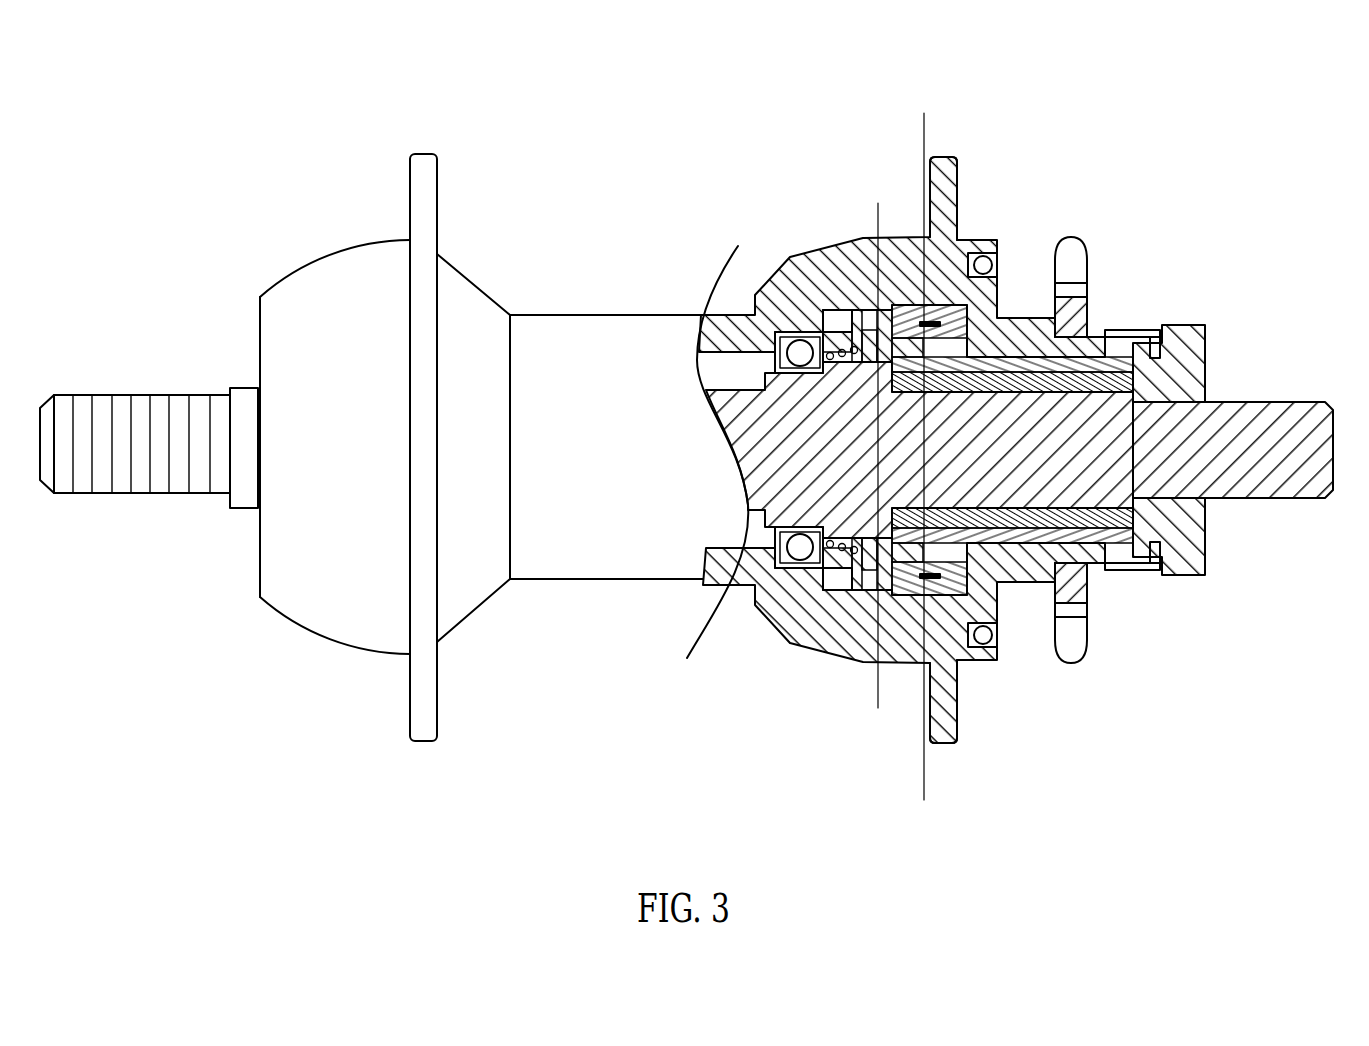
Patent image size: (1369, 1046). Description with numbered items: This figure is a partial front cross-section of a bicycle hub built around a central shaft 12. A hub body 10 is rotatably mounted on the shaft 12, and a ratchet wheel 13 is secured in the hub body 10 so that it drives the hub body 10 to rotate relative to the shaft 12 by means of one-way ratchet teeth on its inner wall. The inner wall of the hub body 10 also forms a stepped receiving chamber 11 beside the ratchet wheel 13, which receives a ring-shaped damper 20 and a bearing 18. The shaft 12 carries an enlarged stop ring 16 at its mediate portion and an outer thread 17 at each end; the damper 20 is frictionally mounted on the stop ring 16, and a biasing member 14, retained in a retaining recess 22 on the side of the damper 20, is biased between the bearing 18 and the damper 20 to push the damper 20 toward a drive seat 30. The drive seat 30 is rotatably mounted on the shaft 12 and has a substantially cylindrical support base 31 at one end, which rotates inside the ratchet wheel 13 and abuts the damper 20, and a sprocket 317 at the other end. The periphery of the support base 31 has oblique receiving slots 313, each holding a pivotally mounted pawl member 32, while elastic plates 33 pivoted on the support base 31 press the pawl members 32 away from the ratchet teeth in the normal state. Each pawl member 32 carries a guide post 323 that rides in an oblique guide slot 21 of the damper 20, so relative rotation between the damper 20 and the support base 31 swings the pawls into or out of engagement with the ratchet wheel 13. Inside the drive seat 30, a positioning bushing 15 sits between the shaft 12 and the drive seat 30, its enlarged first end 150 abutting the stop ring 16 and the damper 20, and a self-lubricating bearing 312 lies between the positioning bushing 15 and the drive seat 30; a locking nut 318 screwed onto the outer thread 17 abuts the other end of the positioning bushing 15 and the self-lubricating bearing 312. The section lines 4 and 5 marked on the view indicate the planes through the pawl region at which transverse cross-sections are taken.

The section line 4- 4 is at (921, 123).
The section line 5- 5 is at (875, 212).
The hub body 10 is at (368, 227).
The stepped receiving chamber 11 is at (702, 313).
The shaft 12 is at (1257, 477).
The ratchet wheel 13 is at (907, 237).
The biasing member 14 is at (757, 603).
The positioning bushing 15 is at (1132, 329).
The stop ring 16 is at (712, 410).
The outer thread 17 is at (1187, 403).
The bearing 18 is at (755, 540).
The damper 20 is at (800, 610).
The oblique guide slots 21 is at (760, 300).
The retaining recess 22 is at (790, 592).
The drive seat 30 is at (1104, 598).
The support base 31 is at (958, 660).
The pawl members 32 is at (1002, 272).
The elastic plates 33 is at (932, 318).
The enlarged first end 150 is at (895, 523).
The self-lubricating bearing 312 is at (1087, 367).
The receiving slots 313 is at (850, 335).
The sprocket 317 is at (1068, 273).
The lock nut 318 is at (1190, 375).
The guide post 323 is at (835, 340).